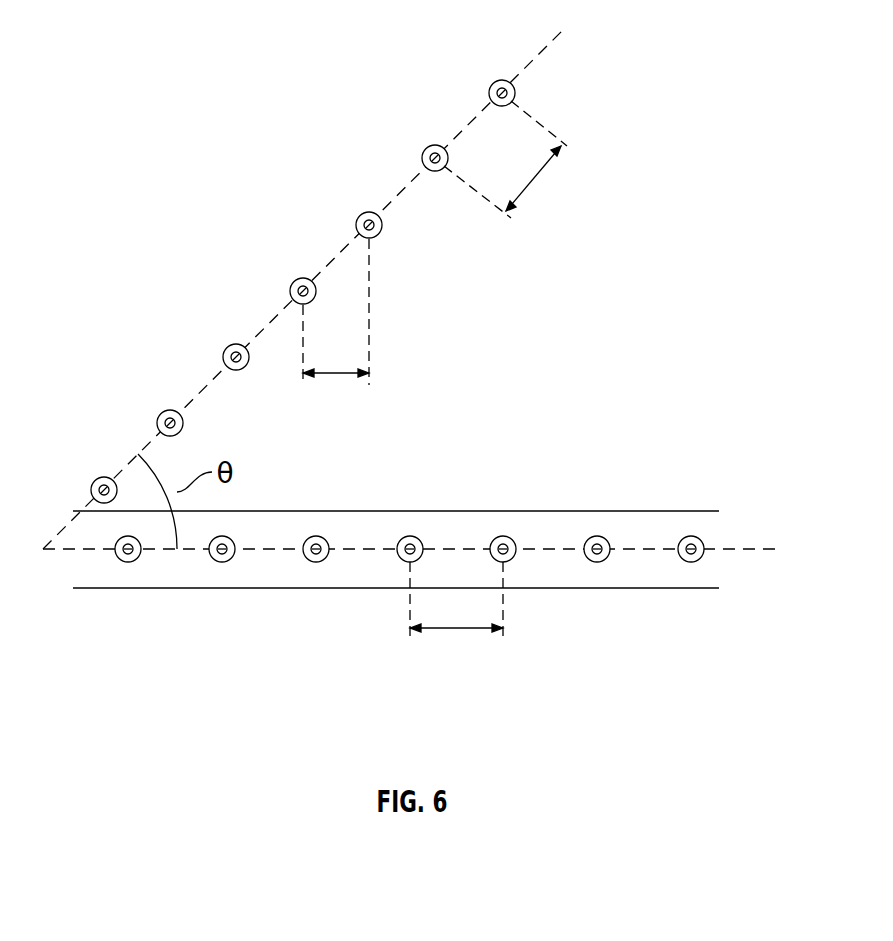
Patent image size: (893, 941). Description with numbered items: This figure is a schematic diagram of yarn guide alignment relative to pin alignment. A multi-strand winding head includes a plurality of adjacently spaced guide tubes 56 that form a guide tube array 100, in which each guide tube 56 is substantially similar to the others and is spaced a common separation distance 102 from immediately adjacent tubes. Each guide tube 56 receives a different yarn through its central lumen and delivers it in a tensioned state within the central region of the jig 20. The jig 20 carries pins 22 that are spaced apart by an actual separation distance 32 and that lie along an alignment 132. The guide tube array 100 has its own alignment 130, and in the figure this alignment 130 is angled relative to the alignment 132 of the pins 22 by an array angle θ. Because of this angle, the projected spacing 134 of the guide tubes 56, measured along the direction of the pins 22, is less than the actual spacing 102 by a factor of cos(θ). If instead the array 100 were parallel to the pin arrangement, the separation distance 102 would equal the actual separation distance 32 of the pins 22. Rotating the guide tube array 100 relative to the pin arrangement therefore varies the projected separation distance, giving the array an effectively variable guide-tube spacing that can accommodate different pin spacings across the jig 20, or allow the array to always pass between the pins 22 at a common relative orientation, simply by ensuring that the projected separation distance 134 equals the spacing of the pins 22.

The guide tube array 100 is at (264, 88).
The alignment of the array 130 is at (547, 43).
The guide tube 56 is at (491, 83).
The separation distance 102 is at (531, 182).
The projected spacing 134 is at (333, 374).
The jig 20 is at (662, 510).
The alignment of the pins 132 is at (78, 548).
The pin 22 is at (318, 562).
The actual separation distance of the pins 32 is at (457, 629).